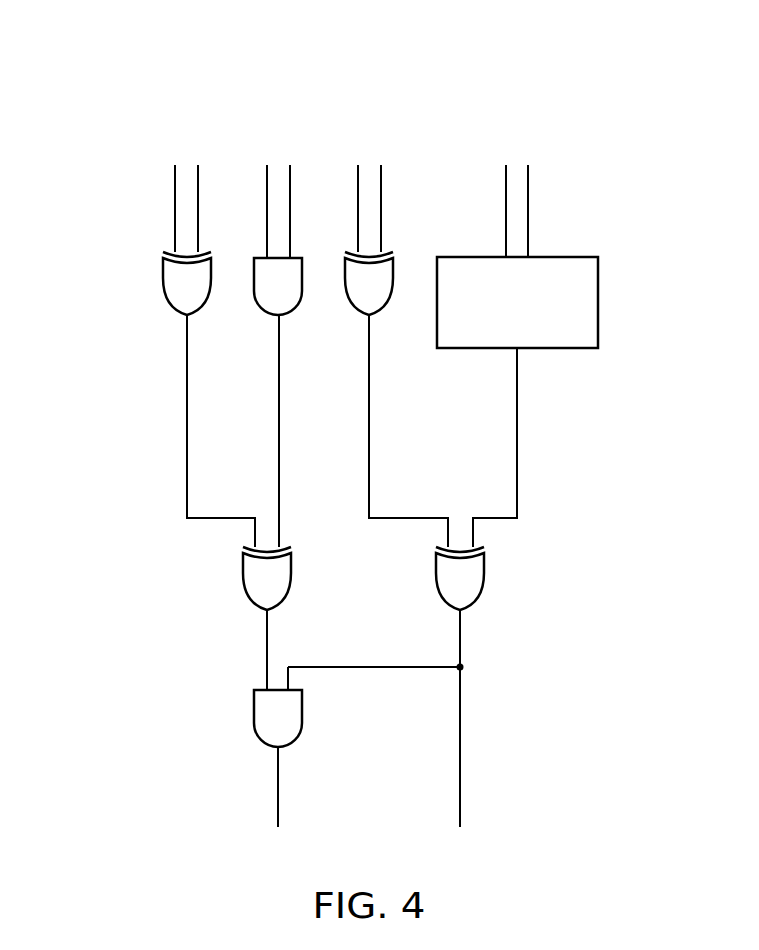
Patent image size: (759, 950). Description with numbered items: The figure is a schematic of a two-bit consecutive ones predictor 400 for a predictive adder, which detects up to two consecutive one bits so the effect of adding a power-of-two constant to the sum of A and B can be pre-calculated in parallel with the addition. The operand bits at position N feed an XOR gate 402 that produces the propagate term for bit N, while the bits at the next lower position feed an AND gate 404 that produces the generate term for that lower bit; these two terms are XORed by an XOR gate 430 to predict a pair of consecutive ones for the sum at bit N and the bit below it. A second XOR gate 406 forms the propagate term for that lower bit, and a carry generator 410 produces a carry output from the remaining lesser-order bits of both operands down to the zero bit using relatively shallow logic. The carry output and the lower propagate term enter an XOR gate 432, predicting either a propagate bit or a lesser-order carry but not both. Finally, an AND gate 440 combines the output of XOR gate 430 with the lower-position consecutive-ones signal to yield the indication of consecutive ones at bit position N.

The two-bit consecutive ones predictor 400 is at (291, 134).
The XOR gate 402 is at (170, 303).
The AND gate 404 is at (255, 303).
The XOR gate 406 is at (385, 303).
The carry generator 410 is at (550, 349).
The XOR gate 430 is at (244, 576).
The XOR gate 432 is at (485, 575).
The AND gate 440 is at (258, 740).